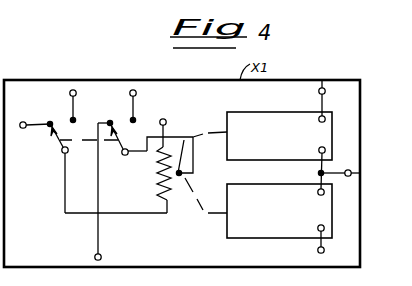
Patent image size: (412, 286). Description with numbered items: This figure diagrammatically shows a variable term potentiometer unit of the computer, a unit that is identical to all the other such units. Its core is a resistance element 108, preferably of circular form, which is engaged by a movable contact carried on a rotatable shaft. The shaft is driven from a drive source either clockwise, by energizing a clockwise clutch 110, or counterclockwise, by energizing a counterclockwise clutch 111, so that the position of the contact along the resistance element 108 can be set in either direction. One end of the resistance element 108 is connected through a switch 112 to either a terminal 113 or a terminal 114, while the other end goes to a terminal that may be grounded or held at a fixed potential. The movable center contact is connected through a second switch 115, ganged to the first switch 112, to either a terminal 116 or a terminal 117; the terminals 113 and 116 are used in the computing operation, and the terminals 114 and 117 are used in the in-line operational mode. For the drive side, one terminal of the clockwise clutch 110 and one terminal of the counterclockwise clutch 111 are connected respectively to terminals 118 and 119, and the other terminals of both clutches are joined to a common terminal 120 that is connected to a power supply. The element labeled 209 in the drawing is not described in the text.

The resistance element 108 is at (170, 206).
The clockwise clutch 110 is at (248, 112).
The counterclockwise clutch 111 is at (240, 238).
The switch 112 is at (95, 169).
The terminal 113 is at (22, 122).
The terminal 114 is at (76, 93).
The switch 115 is at (120, 155).
The terminal 116 is at (101, 256).
The terminal 117 is at (136, 93).
The terminal 118 is at (323, 88).
The terminal 119 is at (319, 252).
The terminal 120 is at (353, 171).
The wiper arm (tap) 209 is at (195, 124).